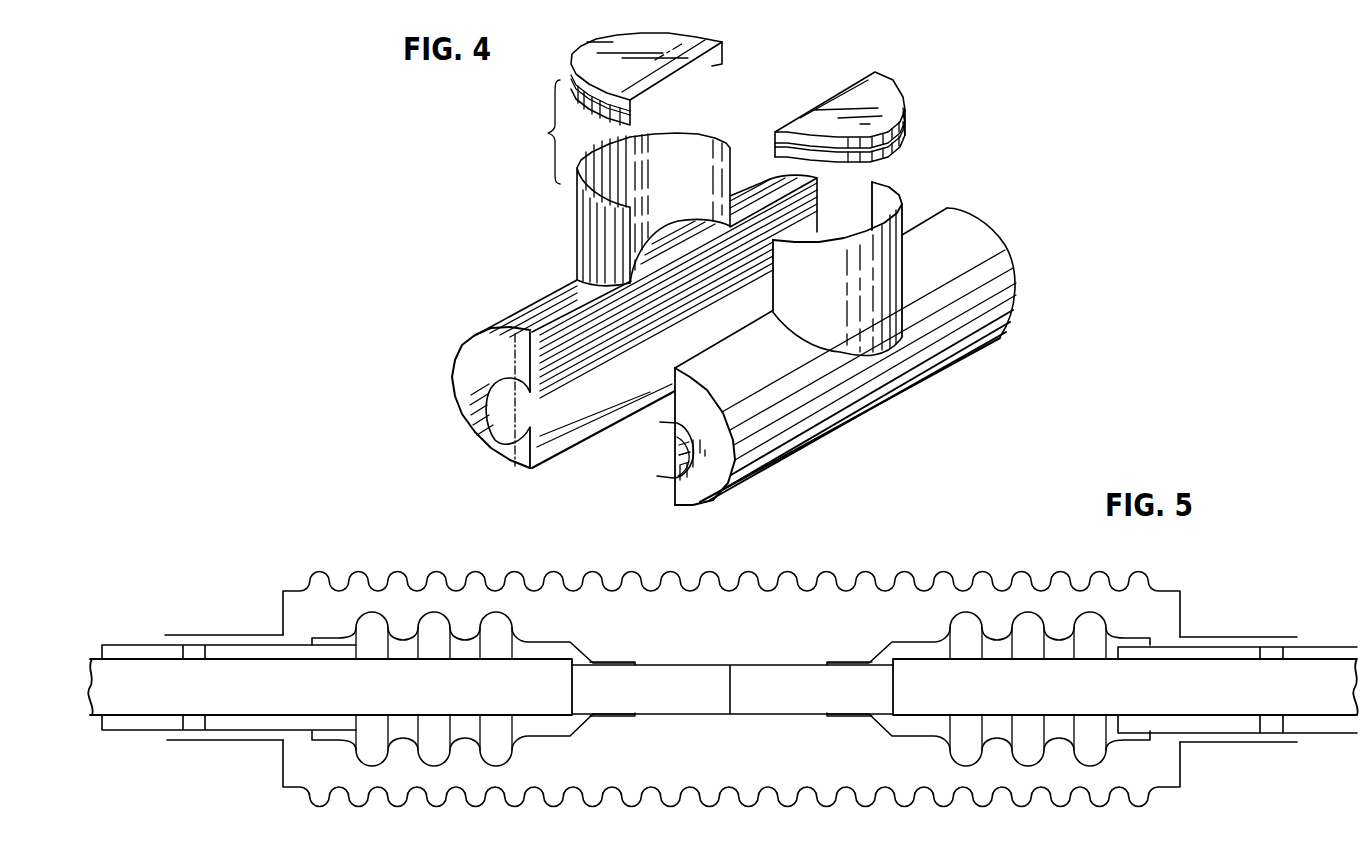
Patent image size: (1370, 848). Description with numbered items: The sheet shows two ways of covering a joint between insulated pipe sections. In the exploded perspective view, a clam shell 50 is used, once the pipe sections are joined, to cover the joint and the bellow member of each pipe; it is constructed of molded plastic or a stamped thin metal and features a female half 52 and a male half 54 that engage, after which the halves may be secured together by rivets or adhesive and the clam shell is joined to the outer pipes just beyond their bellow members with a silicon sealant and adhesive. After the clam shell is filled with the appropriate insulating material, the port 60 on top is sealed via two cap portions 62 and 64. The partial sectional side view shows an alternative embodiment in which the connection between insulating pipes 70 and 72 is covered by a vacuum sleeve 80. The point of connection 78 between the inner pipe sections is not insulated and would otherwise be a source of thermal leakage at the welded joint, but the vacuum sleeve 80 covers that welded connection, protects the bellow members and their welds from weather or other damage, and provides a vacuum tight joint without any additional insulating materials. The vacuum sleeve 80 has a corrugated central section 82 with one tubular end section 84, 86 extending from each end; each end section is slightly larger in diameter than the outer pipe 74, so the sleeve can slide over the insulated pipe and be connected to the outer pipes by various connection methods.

In FIG. 4, the clam shell 50 is at (928, 126).
In FIG. 4, the female half 52 is at (948, 363).
In FIG. 4, the male half 54 is at (555, 293).
In FIG. 4, the port 60 is at (903, 222).
In FIG. 4, the cap portion 62 is at (886, 82).
In FIG. 4, the cap portion 64 is at (703, 24).
In FIG. 5, the insulating pipe 70 is at (126, 636).
In FIG. 5, the insulating pipe 72 is at (1303, 630).
In FIG. 5, the outer pipe 74 is at (148, 732).
In FIG. 5, the point of connection 78 is at (731, 683).
In FIG. 5, the vacuum sleeve 80 is at (849, 567).
In FIG. 5, the corrugated central section 82 is at (471, 571).
In FIG. 5, the tubular end section 84 is at (260, 732).
In FIG. 5, the tubular end section 86 is at (1245, 746).